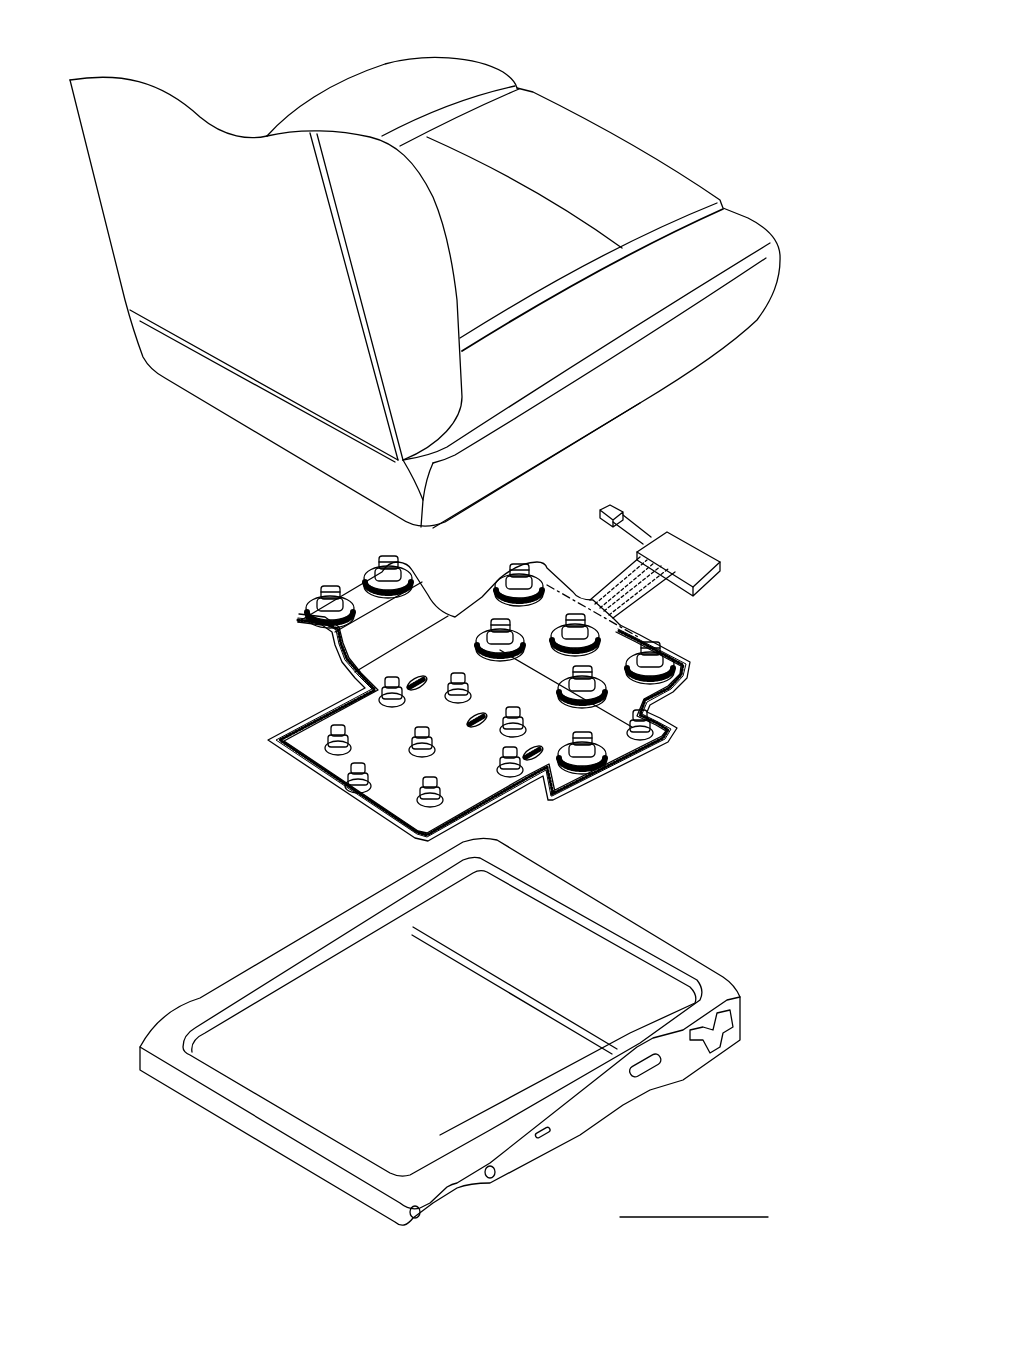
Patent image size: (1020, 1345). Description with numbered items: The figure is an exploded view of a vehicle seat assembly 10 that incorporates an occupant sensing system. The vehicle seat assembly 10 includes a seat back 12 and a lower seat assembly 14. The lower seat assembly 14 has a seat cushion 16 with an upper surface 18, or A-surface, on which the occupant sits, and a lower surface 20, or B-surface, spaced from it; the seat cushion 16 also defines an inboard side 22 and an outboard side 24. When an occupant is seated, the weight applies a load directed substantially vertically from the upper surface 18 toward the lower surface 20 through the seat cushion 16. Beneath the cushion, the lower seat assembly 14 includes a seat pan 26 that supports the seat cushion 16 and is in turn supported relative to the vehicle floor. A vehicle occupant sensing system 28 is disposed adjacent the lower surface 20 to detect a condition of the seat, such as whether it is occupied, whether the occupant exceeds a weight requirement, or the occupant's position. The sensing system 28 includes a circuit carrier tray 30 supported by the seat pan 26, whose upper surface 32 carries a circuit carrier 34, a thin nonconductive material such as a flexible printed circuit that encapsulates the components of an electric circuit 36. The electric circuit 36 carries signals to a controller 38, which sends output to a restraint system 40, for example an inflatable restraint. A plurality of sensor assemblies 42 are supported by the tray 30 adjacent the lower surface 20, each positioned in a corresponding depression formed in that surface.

The vehicle seat assembly 10 is at (172, 514).
The seat back 12 is at (157, 243).
The lower seat assembly 14 is at (718, 413).
The seat cushion 16 is at (603, 147).
The upper surface 18 is at (505, 237).
The lower surface 20 is at (670, 383).
The inboard side 22 is at (693, 332).
The outboard side 24 is at (340, 85).
The seat pan 26 is at (343, 1097).
The vehicle occupant sensing system 28 is at (228, 672).
The circuit carrier tray 30 is at (248, 740).
The upper surface 32 is at (295, 723).
The circuit carrier 34 is at (397, 803).
The electric circuit 36 is at (633, 638).
The controller 38 is at (683, 557).
The restraint system 40 is at (610, 510).
The sensor assemblies 42 is at (320, 765).